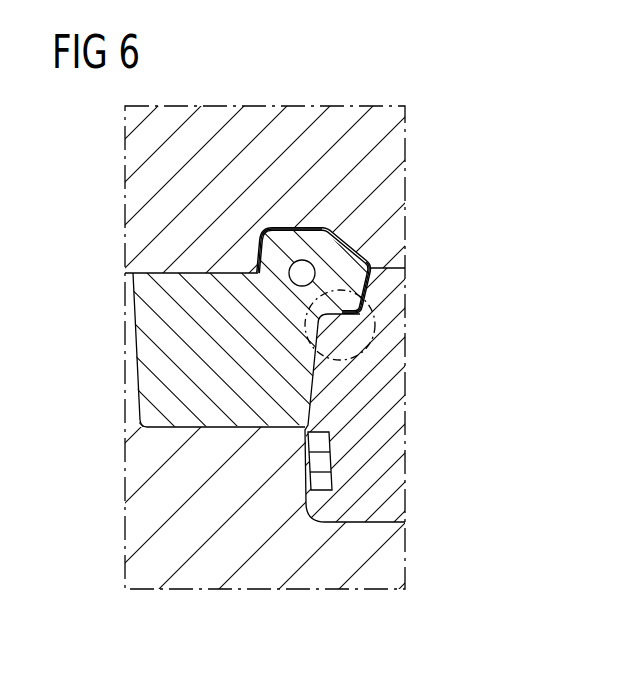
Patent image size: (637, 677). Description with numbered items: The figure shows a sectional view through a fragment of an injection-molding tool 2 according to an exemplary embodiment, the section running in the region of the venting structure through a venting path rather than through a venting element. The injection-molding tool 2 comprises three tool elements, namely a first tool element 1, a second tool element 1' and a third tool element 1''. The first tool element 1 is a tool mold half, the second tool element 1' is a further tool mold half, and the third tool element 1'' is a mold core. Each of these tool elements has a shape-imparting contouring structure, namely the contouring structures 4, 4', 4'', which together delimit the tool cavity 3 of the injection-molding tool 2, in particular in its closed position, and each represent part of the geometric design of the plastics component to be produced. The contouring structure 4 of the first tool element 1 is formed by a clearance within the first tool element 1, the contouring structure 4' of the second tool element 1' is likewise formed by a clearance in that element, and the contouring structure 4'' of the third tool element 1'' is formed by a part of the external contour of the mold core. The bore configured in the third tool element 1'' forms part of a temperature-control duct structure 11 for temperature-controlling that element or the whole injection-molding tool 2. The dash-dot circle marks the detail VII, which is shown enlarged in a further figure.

The first tool element 1 is at (346, 350).
The second tool element 1' is at (275, 350).
The third tool element 1'' is at (318, 350).
The injection-molding tool 2 is at (471, 201).
The tool cavity 3 is at (360, 247).
The contouring structure 4 is at (395, 288).
The contouring structure 4' is at (297, 139).
The contouring structure 4'' is at (178, 237).
The temperature-control duct structure 11 is at (302, 273).
The detail VII is at (364, 350).